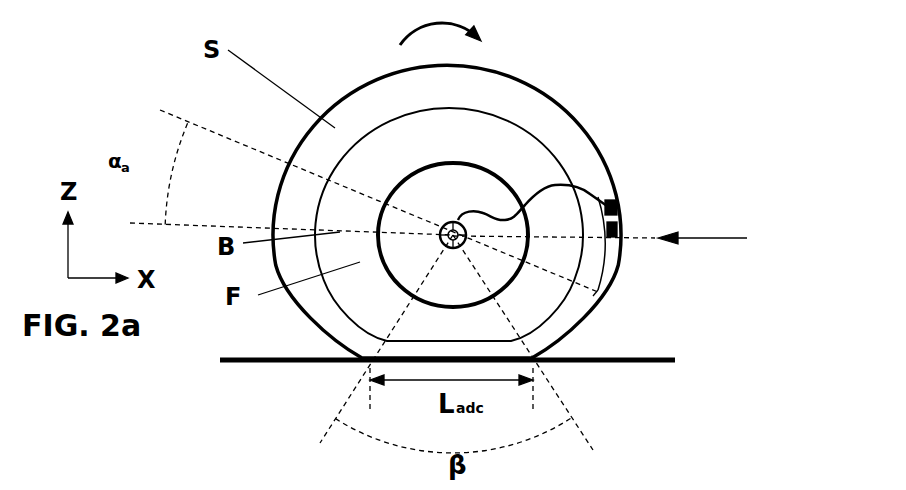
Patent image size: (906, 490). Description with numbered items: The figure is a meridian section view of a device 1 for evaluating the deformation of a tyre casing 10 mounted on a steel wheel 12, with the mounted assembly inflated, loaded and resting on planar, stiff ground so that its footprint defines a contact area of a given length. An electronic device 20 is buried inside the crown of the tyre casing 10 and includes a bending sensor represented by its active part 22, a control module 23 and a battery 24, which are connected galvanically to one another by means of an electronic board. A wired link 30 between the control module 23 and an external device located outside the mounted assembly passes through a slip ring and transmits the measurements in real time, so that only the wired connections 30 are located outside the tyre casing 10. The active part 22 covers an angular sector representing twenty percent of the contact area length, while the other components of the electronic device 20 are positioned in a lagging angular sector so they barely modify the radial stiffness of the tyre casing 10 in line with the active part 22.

The device for evaluating the deformation of the tyre casing 1 is at (498, 185).
The tyre casing 10 is at (555, 99).
The wheel 12 is at (470, 183).
The electronic device 20 is at (726, 237).
The active part of the bending sensor 22 is at (600, 256).
The control module 23 is at (617, 203).
The battery 24 is at (617, 226).
The wired link 30 is at (578, 172).